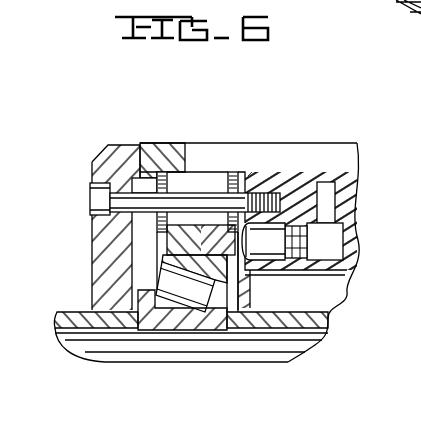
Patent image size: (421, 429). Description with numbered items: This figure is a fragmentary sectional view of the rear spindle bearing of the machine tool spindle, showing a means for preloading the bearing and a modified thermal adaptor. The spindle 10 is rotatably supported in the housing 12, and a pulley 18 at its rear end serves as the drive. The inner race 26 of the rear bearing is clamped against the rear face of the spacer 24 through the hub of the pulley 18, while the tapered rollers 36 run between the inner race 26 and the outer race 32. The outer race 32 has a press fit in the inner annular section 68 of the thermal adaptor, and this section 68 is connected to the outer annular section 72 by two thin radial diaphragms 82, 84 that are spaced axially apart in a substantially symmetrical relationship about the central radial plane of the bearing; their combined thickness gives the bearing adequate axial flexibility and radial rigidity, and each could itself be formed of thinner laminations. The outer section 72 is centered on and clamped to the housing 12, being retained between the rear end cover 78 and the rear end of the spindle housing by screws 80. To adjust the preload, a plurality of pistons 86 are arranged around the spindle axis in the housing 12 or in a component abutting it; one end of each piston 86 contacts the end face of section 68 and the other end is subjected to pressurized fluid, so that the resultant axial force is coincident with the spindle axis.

The spindle 10 is at (255, 356).
The housing 12 is at (358, 166).
The pulley 18 is at (62, 321).
The spacer 24 is at (326, 316).
The inner race of the rear bearing 26 is at (150, 323).
The outer race of the rear bearing 32 is at (162, 248).
The tapered rollers 36 is at (190, 297).
The inner annular section of the thermal adaptor 68 is at (158, 240).
The outer annular section of the thermal adaptor 72 is at (203, 148).
The rear end cover 78 is at (122, 152).
The screws 80 is at (92, 201).
The diaphragm 82 is at (168, 176).
The diaphragm 84 is at (253, 174).
The pistons 86 is at (267, 240).